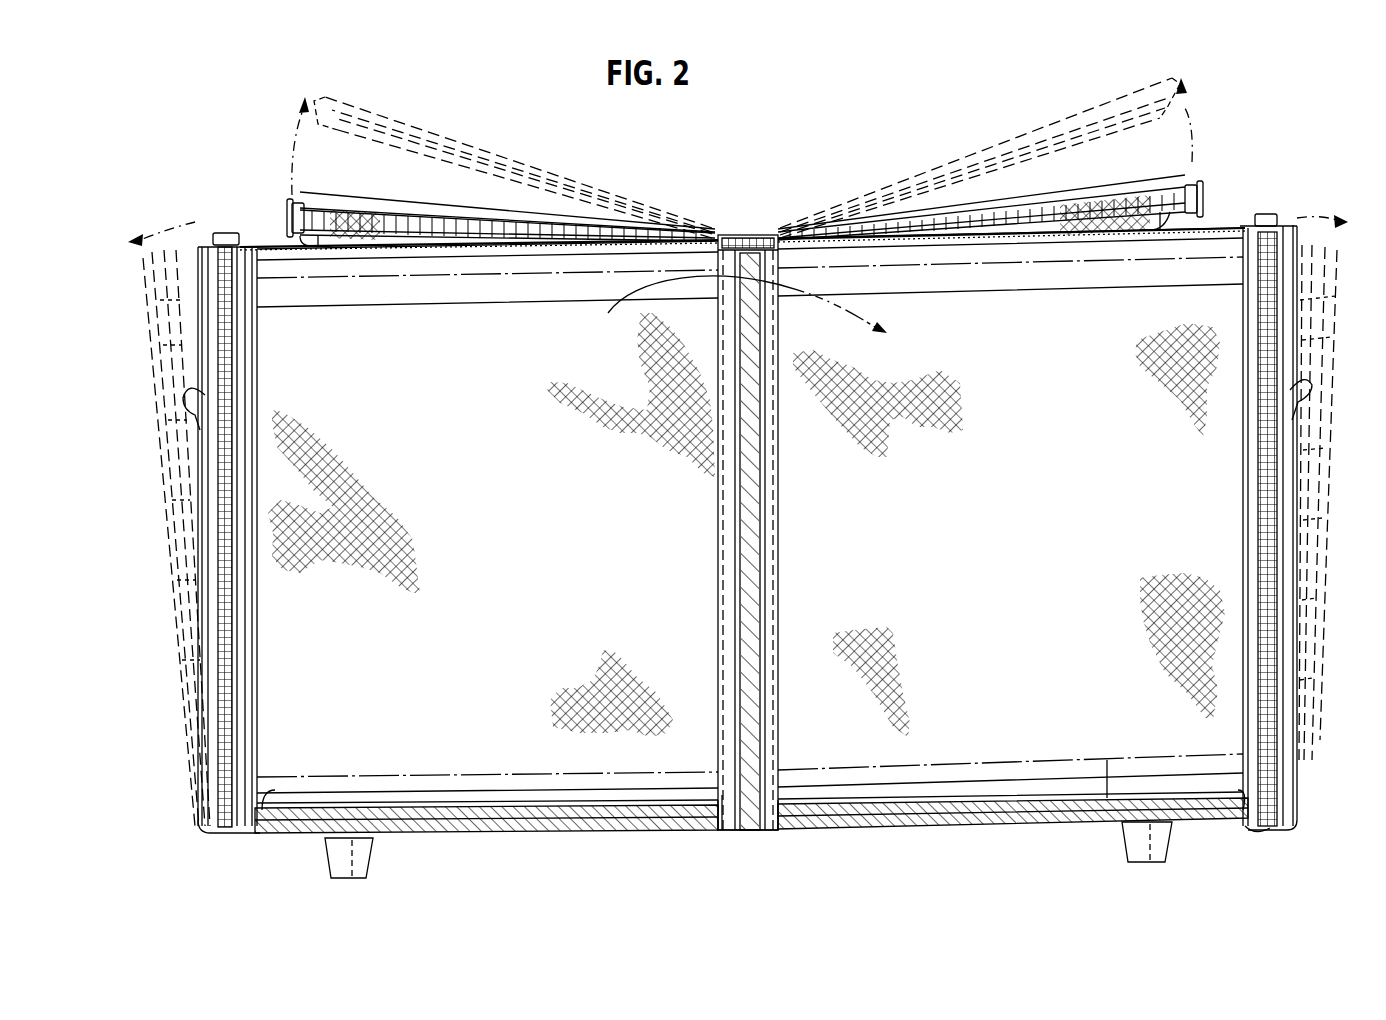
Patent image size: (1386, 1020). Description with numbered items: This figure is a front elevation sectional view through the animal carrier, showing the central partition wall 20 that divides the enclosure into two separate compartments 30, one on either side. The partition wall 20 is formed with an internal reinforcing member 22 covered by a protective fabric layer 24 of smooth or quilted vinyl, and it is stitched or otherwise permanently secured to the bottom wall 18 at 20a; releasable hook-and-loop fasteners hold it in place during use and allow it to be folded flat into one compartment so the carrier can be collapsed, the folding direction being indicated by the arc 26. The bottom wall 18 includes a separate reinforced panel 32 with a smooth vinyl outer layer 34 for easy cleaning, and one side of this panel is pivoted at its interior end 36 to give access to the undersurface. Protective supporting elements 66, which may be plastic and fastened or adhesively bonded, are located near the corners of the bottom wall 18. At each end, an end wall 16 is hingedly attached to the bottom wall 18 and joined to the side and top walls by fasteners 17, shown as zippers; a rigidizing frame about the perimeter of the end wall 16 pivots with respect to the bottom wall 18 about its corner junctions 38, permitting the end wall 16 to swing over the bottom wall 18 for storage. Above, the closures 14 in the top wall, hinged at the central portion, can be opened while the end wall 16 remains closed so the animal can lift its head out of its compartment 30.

The closure 14 is at (366, 203).
The end wall 16 is at (1302, 745).
The fastener 17 is at (1270, 828).
The bottom wall 18 is at (650, 833).
The partition wall 20 is at (771, 532).
The securement location 20a is at (785, 800).
The internal reinforcing member 22 is at (750, 583).
The protective fabric layer 24 is at (770, 334).
The divider rotation direction 26 is at (618, 308).
The compartment 30 is at (478, 530).
The reinforced panel 32 is at (427, 810).
The vinyl outer layer 34 is at (1107, 760).
The interior end 36 is at (722, 795).
The corner junction 38 is at (262, 810).
The protective supporting element 66 is at (372, 853).